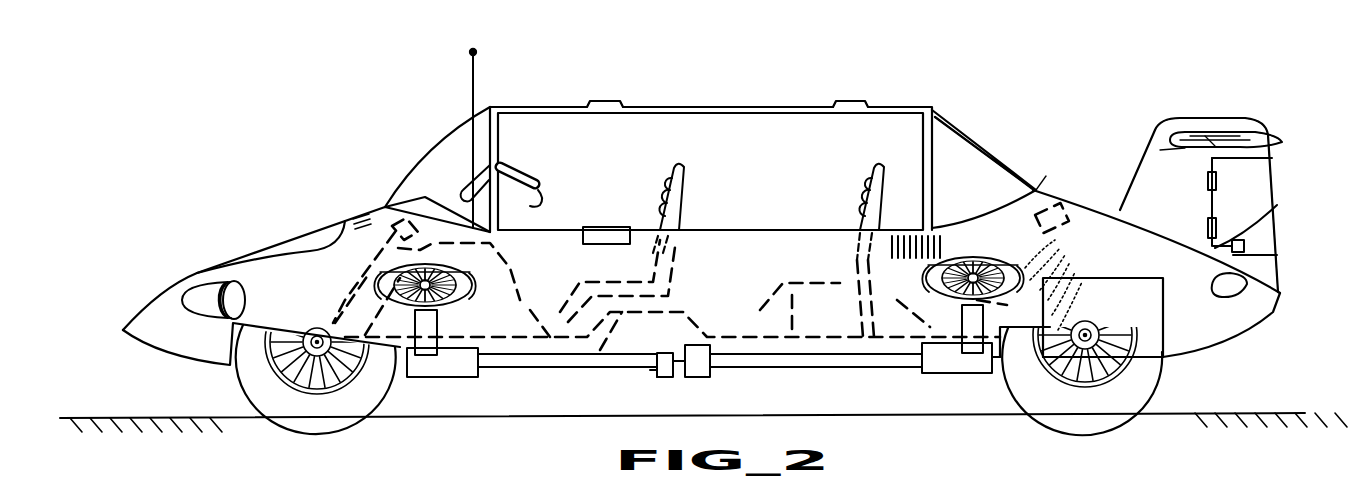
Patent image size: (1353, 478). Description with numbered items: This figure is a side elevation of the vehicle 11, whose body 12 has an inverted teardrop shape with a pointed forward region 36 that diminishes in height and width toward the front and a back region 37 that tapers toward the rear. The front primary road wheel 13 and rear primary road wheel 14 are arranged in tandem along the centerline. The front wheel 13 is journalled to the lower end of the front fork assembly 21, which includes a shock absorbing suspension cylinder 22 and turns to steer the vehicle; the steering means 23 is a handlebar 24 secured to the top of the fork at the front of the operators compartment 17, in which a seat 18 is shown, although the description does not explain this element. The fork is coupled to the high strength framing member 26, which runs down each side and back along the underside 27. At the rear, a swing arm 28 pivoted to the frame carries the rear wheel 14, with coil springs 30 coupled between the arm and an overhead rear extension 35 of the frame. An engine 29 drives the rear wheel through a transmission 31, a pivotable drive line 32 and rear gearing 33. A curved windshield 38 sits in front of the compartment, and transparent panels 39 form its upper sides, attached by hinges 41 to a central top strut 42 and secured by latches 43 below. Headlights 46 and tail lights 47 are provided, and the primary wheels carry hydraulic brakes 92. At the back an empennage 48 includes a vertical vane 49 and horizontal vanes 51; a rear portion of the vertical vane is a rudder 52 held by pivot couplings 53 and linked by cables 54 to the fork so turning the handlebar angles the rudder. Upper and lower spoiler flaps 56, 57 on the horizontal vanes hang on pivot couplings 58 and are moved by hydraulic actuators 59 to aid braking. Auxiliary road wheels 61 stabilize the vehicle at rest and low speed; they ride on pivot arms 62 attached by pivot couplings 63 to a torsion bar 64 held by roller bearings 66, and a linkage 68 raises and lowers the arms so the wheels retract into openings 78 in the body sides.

The vehicle 11 is at (236, 133).
The body 12 is at (263, 248).
The front primary road wheel 13 is at (252, 385).
The rear primary road wheel 14 is at (1150, 383).
The operators compartment 17 is at (573, 178).
The seat 18 is at (660, 180).
The front fork assembly 21 is at (345, 305).
The suspension cylinder 22 is at (366, 272).
The steering means 23 is at (468, 158).
The handlebar 24 is at (540, 193).
The framing member 26 is at (528, 308).
The underside 27 is at (880, 374).
The swing arm 28 is at (1103, 327).
The engine 29 is at (858, 315).
The coil springs 30 is at (1078, 262).
The transmission 31 is at (1068, 238).
The pivotable drive line 32 is at (1005, 383).
The rear gearing 33 is at (1072, 350).
The overhead rear extension 35 is at (1042, 205).
The forward region 36 is at (195, 262).
The back region 37 is at (1068, 176).
The windshield 38 is at (393, 157).
The transparent panels 39 is at (764, 175).
The hinges 41 is at (598, 105).
The strut 42 is at (735, 105).
The latches 43 is at (613, 226).
The headlights 46 is at (212, 302).
The tail lights 47 is at (1237, 295).
The empennage 48 is at (1150, 106).
The vertical vane 49 is at (1235, 125).
The horizontal vanes 51 is at (1180, 152).
The rudder 52 is at (1232, 201).
The pivot couplings 53 is at (1208, 226).
The cables 54 is at (1262, 226).
The upper spoiler flaps 56 is at (1262, 130).
The lower spoiler flaps 57 is at (1272, 158).
The pivot couplings 58 is at (1212, 140).
The hydraulic actuators 59 is at (1185, 152).
The auxiliary road wheels 61 is at (448, 300).
The pivot arms 62 is at (418, 326).
The pivot couplings 63 is at (962, 390).
The torsion bar 64 is at (812, 365).
The roller bearings 66 is at (468, 377).
The linkage 68 is at (640, 381).
The indentations or openings 78 is at (480, 275).
The brakes 92 is at (330, 350).